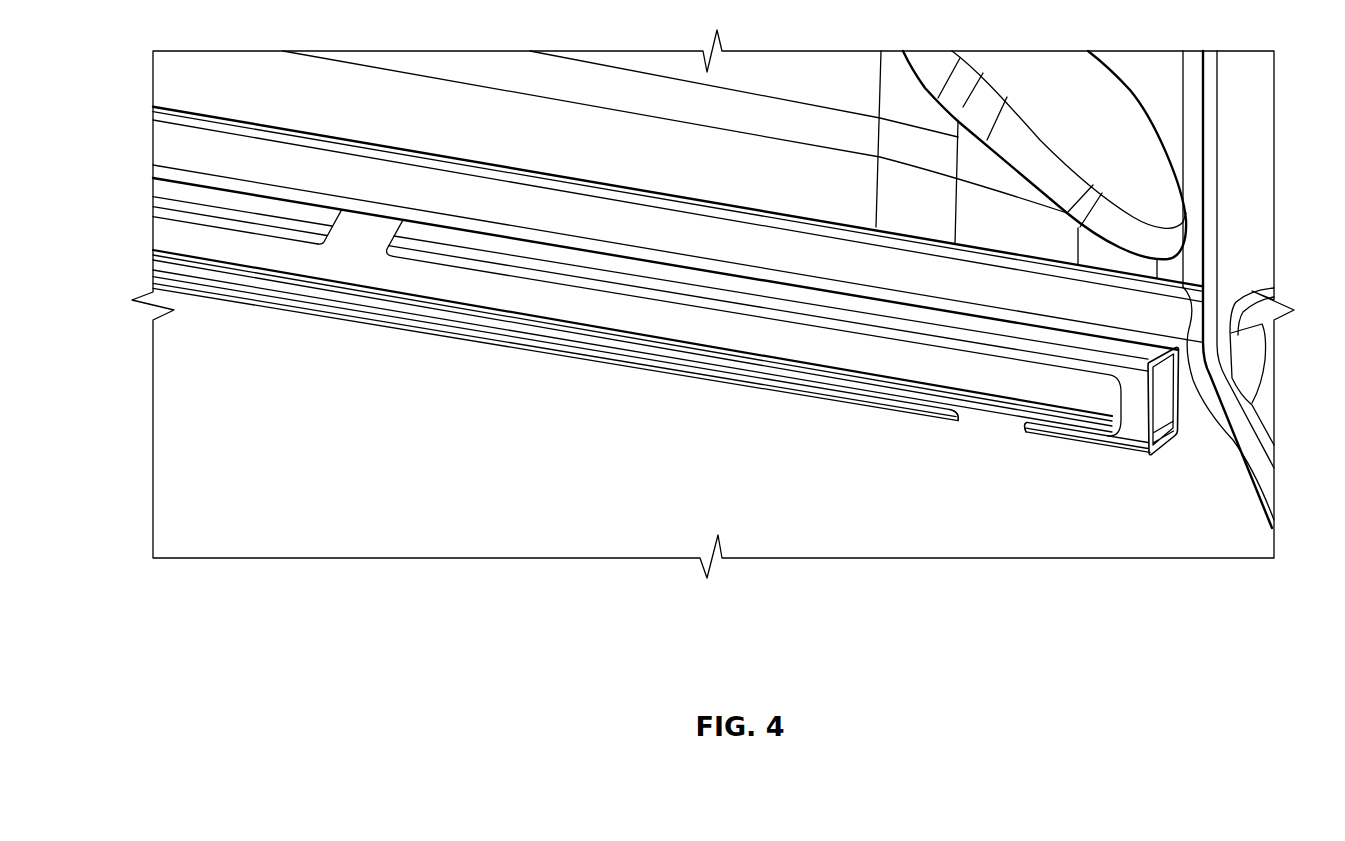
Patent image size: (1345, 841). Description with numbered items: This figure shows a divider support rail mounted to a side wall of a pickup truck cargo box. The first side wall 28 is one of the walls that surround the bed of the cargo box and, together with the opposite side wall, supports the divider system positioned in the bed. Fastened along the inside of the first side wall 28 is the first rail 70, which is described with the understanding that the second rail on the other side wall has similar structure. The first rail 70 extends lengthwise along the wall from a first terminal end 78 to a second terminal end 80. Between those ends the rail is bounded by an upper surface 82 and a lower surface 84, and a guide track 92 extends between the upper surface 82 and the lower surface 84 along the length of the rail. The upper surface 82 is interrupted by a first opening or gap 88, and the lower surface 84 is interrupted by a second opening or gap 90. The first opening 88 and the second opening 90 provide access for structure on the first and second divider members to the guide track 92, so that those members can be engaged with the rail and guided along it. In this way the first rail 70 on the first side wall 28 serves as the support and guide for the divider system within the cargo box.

The first side wall 28 is at (833, 533).
The first rail 70 is at (702, 306).
The first terminal end 78 is at (167, 236).
The second terminal end 80 is at (1158, 437).
The upper surface 82 is at (640, 268).
The lower surface 84 is at (688, 378).
The first opening 88 is at (363, 227).
The second opening 90 is at (975, 413).
The guide track 92 is at (607, 313).